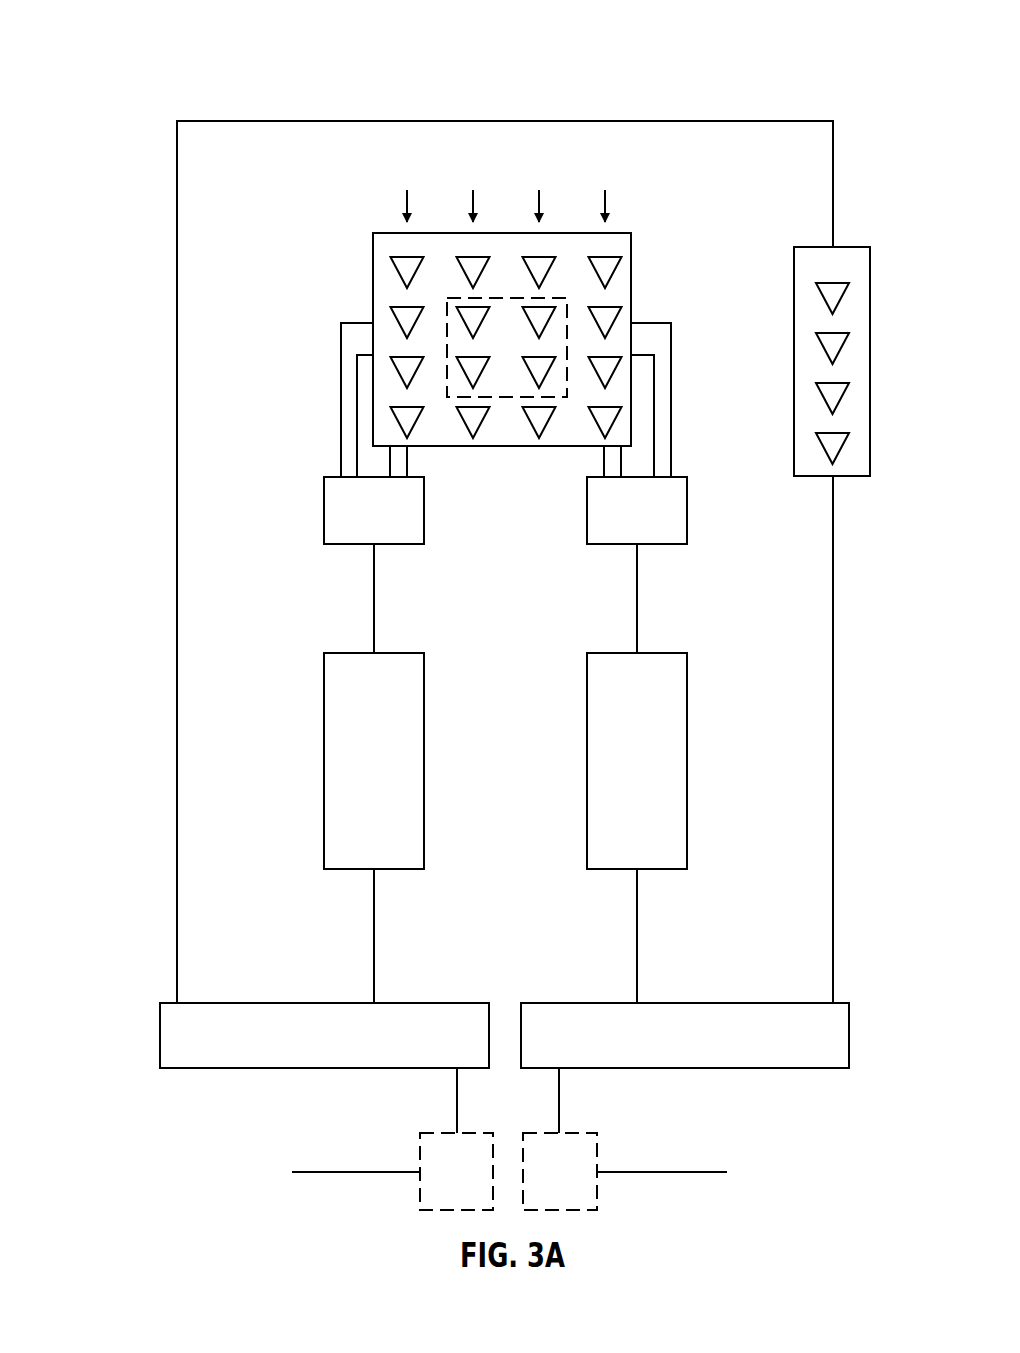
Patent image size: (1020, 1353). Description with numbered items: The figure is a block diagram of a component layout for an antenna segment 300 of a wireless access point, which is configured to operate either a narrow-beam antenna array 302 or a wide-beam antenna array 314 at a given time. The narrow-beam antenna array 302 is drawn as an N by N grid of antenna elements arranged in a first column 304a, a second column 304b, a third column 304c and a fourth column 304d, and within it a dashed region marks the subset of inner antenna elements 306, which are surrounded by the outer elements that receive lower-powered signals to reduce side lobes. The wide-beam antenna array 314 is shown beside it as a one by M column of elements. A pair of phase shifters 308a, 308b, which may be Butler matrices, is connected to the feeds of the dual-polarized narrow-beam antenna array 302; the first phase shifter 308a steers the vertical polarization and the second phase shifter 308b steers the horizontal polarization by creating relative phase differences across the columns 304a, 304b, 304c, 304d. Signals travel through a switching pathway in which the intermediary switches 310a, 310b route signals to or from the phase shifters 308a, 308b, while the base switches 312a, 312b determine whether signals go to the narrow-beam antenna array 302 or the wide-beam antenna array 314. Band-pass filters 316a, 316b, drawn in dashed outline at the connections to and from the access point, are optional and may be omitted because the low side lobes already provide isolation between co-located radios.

The antenna segment 300 is at (200, 38).
The narrow-beam antenna array 302 is at (632, 278).
The first column 304a is at (407, 203).
The second column 304b is at (473, 202).
The third column 304c is at (539, 202).
The fourth column 304d is at (605, 203).
The inner antenna elements 306 is at (447, 312).
The first phase shifter 308a is at (343, 526).
The second phase shifter 308b is at (606, 526).
The intermediary switch 310a is at (344, 776).
The intermediary switch 310b is at (607, 776).
The base switch 312a is at (294, 1051).
The base switch 312b is at (655, 1051).
The wide-beam antenna array 314 is at (847, 247).
The band-pass filter 316a is at (428, 1186).
The band-pass filter 316b is at (531, 1186).